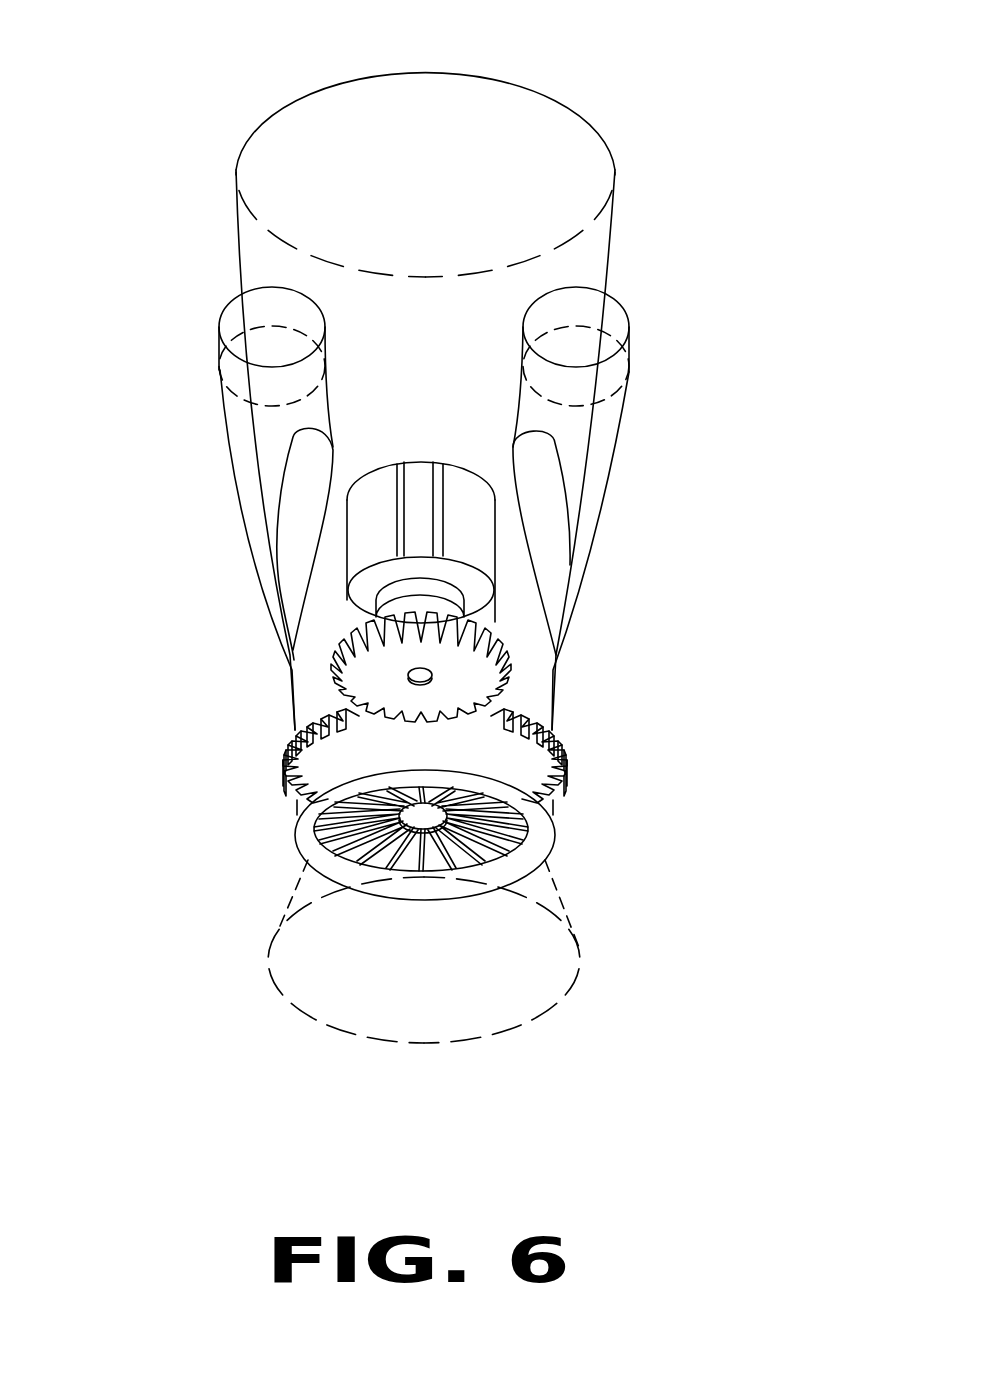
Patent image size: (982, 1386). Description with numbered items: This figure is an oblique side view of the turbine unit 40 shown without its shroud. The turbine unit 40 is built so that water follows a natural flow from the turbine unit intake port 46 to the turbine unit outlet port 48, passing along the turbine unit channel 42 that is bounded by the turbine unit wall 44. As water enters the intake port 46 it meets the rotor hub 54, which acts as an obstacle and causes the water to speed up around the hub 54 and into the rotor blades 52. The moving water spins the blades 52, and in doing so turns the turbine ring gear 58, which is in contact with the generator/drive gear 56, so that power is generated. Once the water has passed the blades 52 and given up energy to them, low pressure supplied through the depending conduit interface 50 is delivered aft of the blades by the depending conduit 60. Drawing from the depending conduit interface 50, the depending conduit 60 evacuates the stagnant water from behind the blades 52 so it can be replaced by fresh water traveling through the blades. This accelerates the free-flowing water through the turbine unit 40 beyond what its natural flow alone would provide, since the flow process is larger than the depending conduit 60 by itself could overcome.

The turbine unit 40 is at (535, 1034).
The turbine unit channel 42 is at (423, 168).
The turbine unit wall 44 is at (583, 942).
The turbine unit intake port 46 is at (382, 978).
The turbine unit outlet port 48 is at (553, 93).
The depending conduit interface 50 is at (266, 315).
The rotor blades 52 is at (493, 855).
The rotor hub 54 is at (422, 817).
The generator/drive gear 56 is at (382, 668).
The turbine ring gear 58 is at (307, 753).
The depending conduit 60 is at (540, 468).